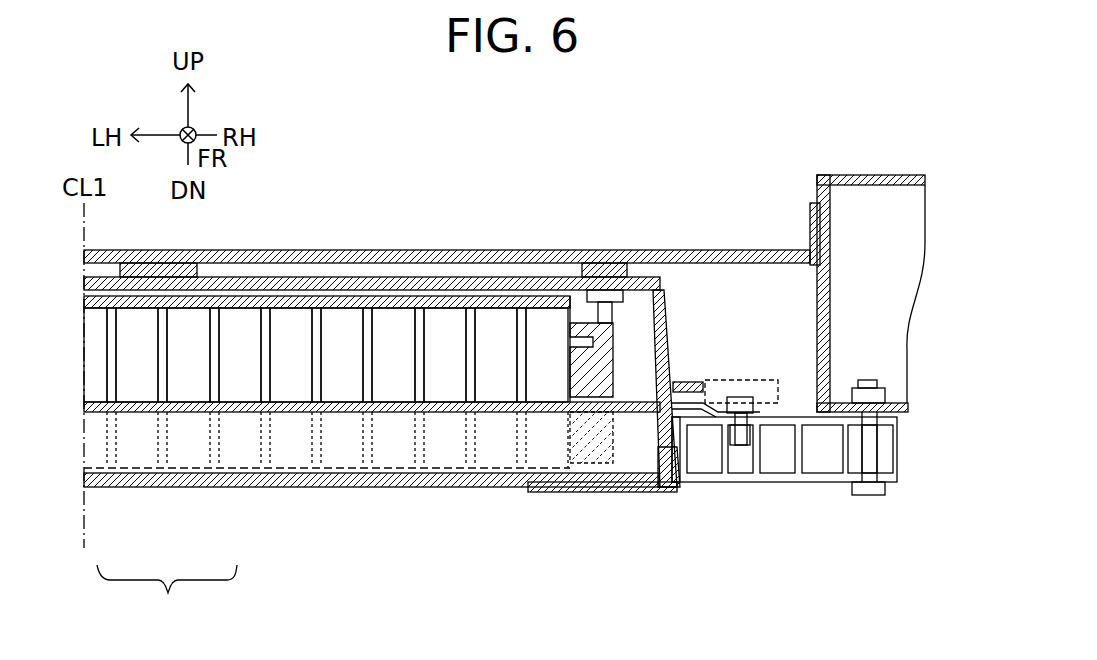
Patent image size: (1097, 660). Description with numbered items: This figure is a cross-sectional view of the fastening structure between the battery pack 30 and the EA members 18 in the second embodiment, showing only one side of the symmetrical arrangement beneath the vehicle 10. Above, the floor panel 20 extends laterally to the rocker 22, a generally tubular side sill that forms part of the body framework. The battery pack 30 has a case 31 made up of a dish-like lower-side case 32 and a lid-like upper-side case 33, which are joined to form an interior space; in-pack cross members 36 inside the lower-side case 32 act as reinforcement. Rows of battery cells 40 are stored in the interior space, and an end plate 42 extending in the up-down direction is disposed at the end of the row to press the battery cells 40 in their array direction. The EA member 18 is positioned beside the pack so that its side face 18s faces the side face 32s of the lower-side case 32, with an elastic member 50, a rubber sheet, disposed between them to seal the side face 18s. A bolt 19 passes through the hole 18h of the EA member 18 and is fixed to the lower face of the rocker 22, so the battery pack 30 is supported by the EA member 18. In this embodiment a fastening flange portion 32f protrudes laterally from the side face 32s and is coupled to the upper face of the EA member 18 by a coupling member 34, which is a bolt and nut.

The vehicle 10 is at (775, 120).
The EA member 18 is at (817, 482).
The hole 18h is at (889, 457).
The side face 18s is at (678, 485).
The bolt 19 is at (867, 495).
The floor panel 20 is at (322, 250).
The rocker 22 is at (850, 175).
The battery pack 30 is at (703, 297).
The case 31 is at (167, 596).
The lower-side case 32 is at (102, 487).
The fastening flange portion 32f is at (735, 380).
The side face 32s is at (677, 490).
The upper-side case 33 is at (240, 283).
The coupling member 34 is at (765, 415).
The in-pack cross member 36 is at (445, 437).
The battery cell 40 is at (347, 380).
The end plate 42 is at (582, 375).
The elastic member 50 is at (740, 445).